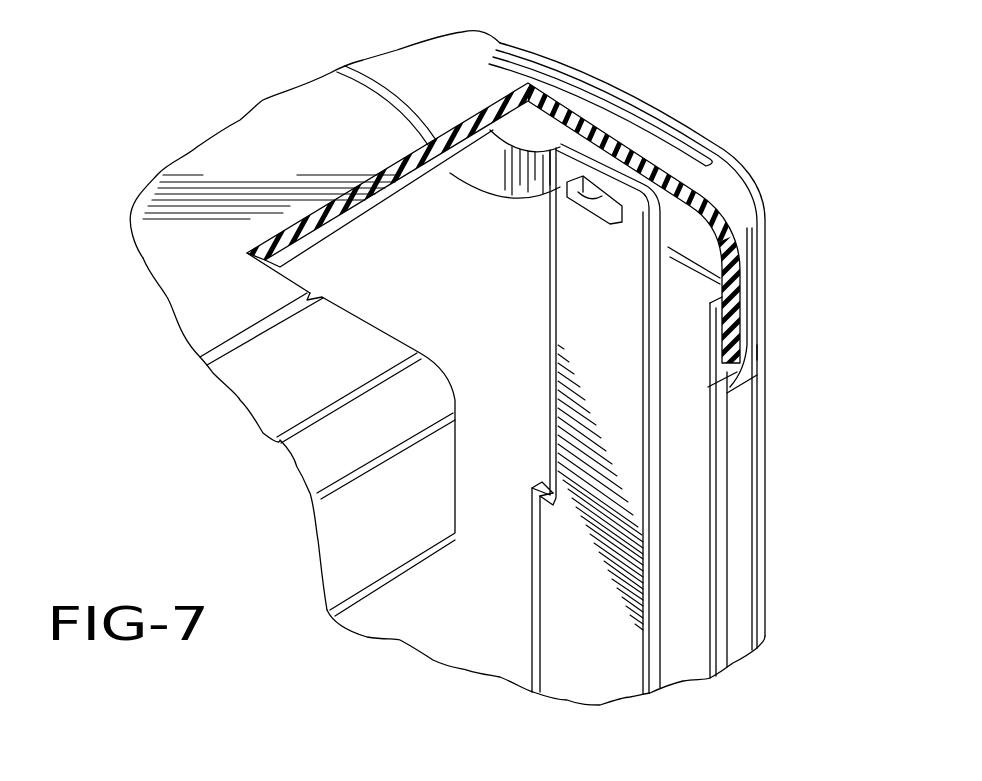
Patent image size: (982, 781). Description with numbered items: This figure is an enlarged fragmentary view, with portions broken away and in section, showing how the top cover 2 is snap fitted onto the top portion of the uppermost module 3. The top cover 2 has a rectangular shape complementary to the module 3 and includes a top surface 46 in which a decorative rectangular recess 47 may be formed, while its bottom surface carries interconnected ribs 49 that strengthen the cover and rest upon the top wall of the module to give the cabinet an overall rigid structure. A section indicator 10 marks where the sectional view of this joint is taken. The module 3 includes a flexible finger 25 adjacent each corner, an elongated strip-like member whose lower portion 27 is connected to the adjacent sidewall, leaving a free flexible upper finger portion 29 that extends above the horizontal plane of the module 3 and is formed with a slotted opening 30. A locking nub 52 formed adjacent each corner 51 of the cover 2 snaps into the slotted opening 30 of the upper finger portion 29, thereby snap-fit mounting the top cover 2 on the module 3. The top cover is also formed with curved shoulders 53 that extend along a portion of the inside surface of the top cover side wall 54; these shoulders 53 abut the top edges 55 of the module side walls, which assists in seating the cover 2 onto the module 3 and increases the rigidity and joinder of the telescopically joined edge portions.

The top cover 2 is at (248, 152).
The module 3 is at (768, 560).
The section line 10- 10 is at (718, 132).
The flexible finger 25 is at (545, 605).
The lower portion 27 is at (563, 682).
The upper finger portion 29 is at (577, 293).
The slotted opening 30 is at (592, 190).
The top surface 46 is at (273, 127).
The decorative rectangular recess 47 is at (363, 83).
The ribs 49 is at (328, 243).
The corner 51 is at (765, 260).
The locking nub 52 is at (596, 218).
The curved shoulder 53 is at (718, 305).
The top cover side wall 54 is at (748, 298).
The top edge 55 is at (716, 306).